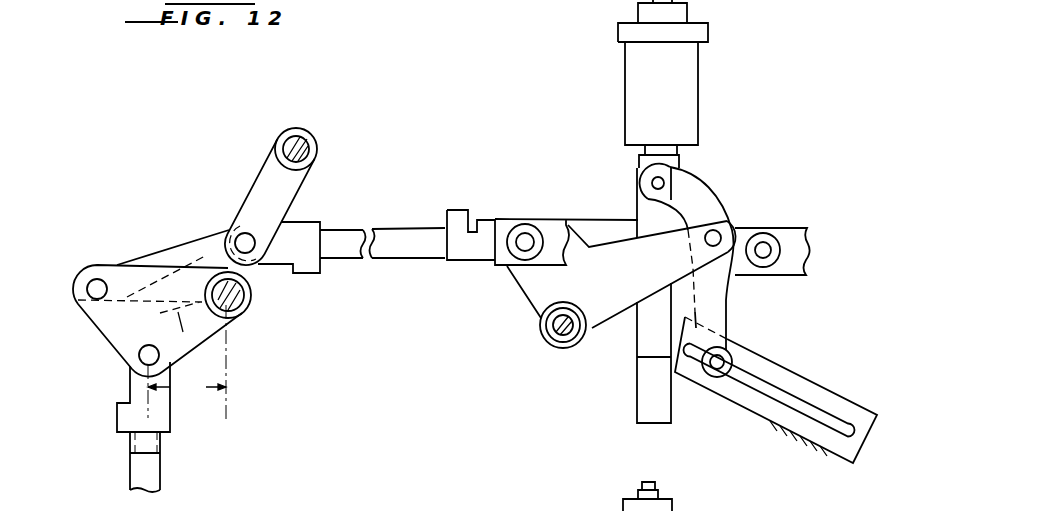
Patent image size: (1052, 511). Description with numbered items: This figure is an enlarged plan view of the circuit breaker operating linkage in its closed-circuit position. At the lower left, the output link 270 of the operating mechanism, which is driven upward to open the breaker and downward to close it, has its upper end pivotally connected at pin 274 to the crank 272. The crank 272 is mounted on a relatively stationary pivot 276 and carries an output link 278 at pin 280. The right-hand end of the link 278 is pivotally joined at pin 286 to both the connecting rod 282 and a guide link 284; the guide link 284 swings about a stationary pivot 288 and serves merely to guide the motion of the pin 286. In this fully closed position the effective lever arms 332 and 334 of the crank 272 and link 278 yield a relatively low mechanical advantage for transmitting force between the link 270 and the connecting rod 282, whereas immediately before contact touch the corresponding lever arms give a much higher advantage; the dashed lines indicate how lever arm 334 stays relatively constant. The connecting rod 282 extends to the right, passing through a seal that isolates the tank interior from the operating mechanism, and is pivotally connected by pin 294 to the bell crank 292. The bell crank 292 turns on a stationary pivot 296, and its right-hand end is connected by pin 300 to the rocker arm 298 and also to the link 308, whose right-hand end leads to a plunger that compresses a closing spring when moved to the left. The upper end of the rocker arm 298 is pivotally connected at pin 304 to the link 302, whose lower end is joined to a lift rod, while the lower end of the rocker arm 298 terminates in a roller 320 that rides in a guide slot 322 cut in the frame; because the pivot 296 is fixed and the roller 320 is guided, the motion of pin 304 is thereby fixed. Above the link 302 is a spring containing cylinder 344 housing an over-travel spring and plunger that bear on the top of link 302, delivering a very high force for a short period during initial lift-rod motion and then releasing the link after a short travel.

The output link 270 is at (150, 468).
The crank 272 is at (111, 335).
The pin 274 is at (140, 352).
The stationary pivot 276 is at (241, 301).
The output link 278 is at (207, 240).
The pin 280 is at (97, 280).
The connecting rod 282 is at (399, 243).
The guide link 284 is at (282, 195).
The pin 286 is at (248, 247).
The stationary pivot 288 is at (303, 146).
The bell crank 292 is at (612, 286).
The pin 294 is at (525, 242).
The stationary pivot 296 is at (556, 331).
The rocker arm 298 is at (695, 200).
The pin 300 is at (715, 236).
The link 302 is at (643, 333).
The pin 304 is at (661, 182).
The link 308 is at (792, 234).
The roller 320 is at (720, 361).
The guide slot 322 is at (783, 392).
The effective lever arm 332 is at (187, 364).
The effective lever arm 334 is at (162, 266).
The spring containing cylinder 344 is at (641, 106).